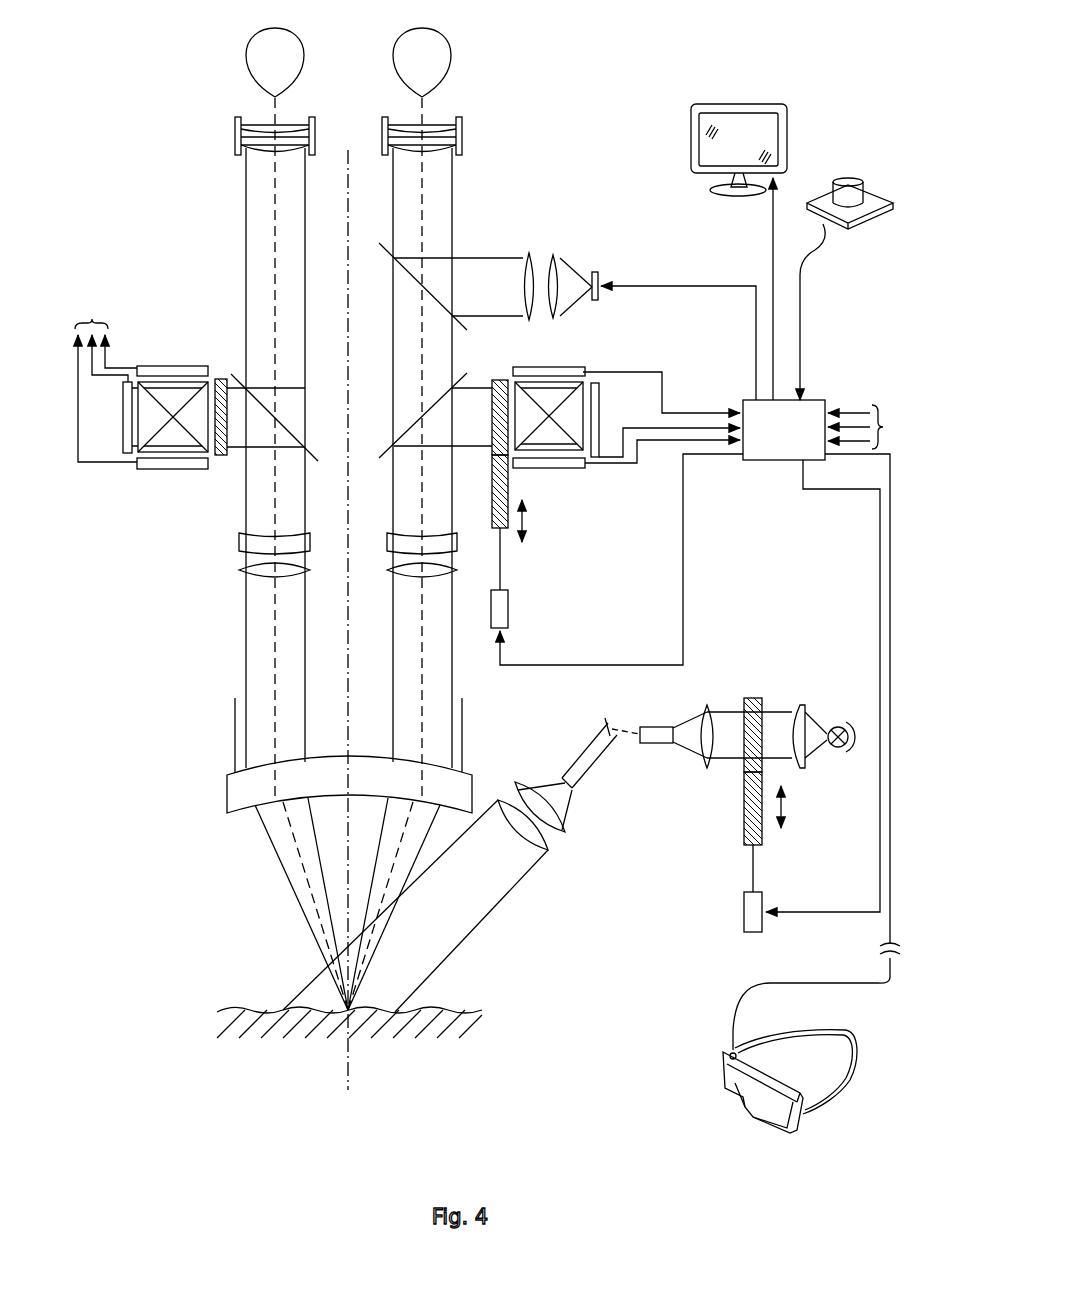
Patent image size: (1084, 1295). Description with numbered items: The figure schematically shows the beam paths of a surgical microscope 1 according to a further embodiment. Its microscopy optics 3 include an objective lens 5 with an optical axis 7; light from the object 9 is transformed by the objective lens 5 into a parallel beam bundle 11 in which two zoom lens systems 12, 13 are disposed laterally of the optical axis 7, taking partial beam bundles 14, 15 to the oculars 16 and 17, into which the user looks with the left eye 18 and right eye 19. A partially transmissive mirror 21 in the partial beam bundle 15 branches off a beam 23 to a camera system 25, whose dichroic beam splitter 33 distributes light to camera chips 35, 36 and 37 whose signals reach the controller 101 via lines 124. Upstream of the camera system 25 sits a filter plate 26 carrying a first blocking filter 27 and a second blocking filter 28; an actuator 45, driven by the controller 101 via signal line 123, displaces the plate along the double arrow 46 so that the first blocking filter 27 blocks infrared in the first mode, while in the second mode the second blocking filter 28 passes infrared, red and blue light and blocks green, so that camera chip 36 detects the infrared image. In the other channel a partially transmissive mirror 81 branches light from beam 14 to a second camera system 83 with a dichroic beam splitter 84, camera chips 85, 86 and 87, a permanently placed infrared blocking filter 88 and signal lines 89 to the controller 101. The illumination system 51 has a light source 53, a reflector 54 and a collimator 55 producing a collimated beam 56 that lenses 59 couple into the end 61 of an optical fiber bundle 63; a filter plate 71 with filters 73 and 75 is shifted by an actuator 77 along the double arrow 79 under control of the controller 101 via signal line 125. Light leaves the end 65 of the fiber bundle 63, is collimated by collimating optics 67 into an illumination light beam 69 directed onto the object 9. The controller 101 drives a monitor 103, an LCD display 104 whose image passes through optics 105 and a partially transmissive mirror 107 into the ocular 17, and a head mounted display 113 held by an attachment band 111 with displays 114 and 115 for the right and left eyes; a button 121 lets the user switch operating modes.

The surgical microscope 1 is at (603, 102).
The microscopy optics 3 is at (170, 148).
The objective lens 5 is at (228, 796).
The optical axis 7 is at (350, 1065).
The object 9 is at (232, 1005).
The parallel beam bundle 11 is at (235, 727).
The zoom lens system 12 is at (233, 532).
The zoom lens system 13 is at (383, 532).
The partial beam bundle 14 is at (246, 211).
The partial beam bundle 15 is at (452, 211).
The ocular 16 is at (235, 131).
The ocular 17 is at (462, 131).
The left eye 18 is at (245, 65).
The right eye 19 is at (392, 65).
The partially transmissive mirror 21 is at (412, 428).
The beam 23 is at (432, 445).
The camera system 25 is at (660, 355).
The filter plate 26 is at (500, 380).
The first blocking filter 27 is at (490, 393).
The second blocking filter 28 is at (510, 490).
The dichroic beam splitter 33 is at (585, 383).
The camera chip 35 is at (565, 367).
The camera chip 36 is at (602, 403).
The camera chip 37 is at (580, 470).
The actuator 45 is at (508, 608).
The double arrow 46 is at (524, 522).
The illumination system 51 is at (643, 852).
The light source 53 is at (840, 753).
The reflector 54 is at (843, 722).
The collimator 55 is at (800, 705).
The collimated beam 56 is at (775, 710).
The lens 59 is at (705, 770).
The end of optical fiber bundle 61 is at (680, 745).
The optical fiber bundle 63 is at (655, 748).
The end of fiber bundle 65 is at (557, 785).
The collimating optics 67 is at (554, 882).
The illumination light beam 69 is at (480, 918).
The filter plate 71 is at (753, 698).
The filter 73 is at (748, 724).
The filter 75 is at (745, 826).
The actuator 77 is at (744, 912).
The double arrow 79 is at (784, 814).
The partially transmissive mirror 81 is at (285, 425).
The second camera system 83 is at (203, 337).
The dichroic beam splitter 84 is at (208, 455).
The camera chip 85 is at (152, 366).
The camera chip 86 is at (123, 435).
The camera chip 87 is at (155, 469).
The infrared blocking filter 88 is at (220, 379).
The signal lines 89 is at (492, 376).
The controller 101 is at (770, 440).
The monitor 103 is at (691, 141).
The LCD display 104 is at (597, 272).
The optics 105 is at (522, 248).
The partially transmissive mirror 107 is at (412, 273).
The attachment band 111 is at (857, 1058).
The head mounted display 113 is at (823, 1128).
The display 114 is at (735, 1083).
The display 115 is at (778, 1120).
The button 121 is at (850, 172).
The signal line 123 is at (683, 585).
The lines 124 is at (696, 405).
The signal line 125 is at (800, 915).